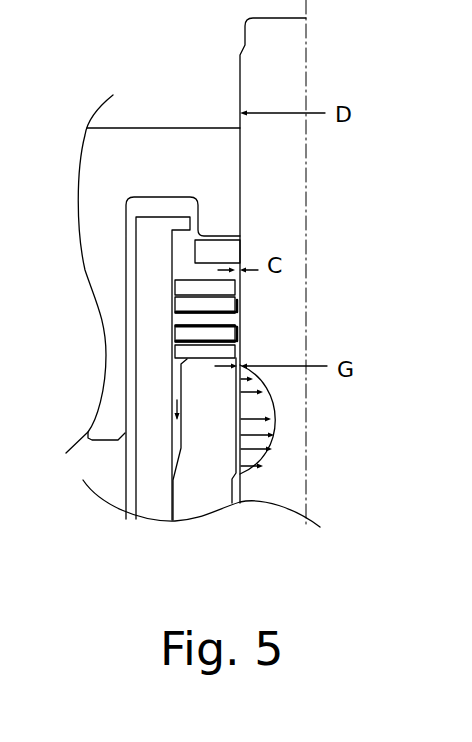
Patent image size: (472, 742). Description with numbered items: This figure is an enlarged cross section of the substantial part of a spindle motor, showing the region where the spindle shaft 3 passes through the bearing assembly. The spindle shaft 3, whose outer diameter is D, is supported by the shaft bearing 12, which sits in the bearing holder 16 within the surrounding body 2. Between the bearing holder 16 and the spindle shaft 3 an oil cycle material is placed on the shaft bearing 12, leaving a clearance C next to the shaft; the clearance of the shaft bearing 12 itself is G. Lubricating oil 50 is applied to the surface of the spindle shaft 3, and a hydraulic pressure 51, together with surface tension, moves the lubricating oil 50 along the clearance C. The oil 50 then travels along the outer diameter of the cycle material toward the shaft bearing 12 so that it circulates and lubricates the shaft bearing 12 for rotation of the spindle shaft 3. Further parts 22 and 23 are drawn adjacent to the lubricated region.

The housing body 2 is at (150, 133).
The spindle shaft 3 is at (295, 148).
The shaft bearing 12 is at (215, 503).
The bearing holder 16 is at (152, 508).
The collar 22 is at (233, 252).
The sealing rings 23 is at (235, 337).
The lubricating oil 50 is at (235, 290).
The hydraulic pressure 51 is at (241, 404).